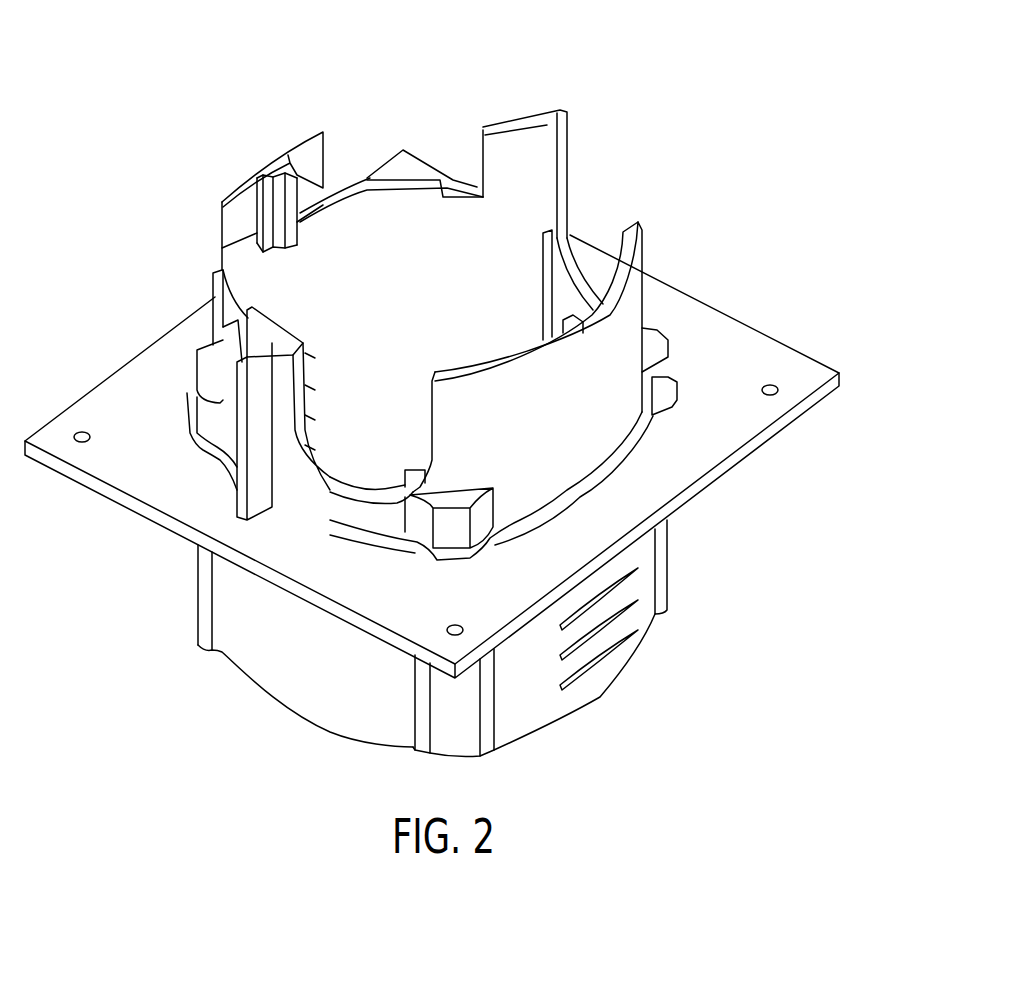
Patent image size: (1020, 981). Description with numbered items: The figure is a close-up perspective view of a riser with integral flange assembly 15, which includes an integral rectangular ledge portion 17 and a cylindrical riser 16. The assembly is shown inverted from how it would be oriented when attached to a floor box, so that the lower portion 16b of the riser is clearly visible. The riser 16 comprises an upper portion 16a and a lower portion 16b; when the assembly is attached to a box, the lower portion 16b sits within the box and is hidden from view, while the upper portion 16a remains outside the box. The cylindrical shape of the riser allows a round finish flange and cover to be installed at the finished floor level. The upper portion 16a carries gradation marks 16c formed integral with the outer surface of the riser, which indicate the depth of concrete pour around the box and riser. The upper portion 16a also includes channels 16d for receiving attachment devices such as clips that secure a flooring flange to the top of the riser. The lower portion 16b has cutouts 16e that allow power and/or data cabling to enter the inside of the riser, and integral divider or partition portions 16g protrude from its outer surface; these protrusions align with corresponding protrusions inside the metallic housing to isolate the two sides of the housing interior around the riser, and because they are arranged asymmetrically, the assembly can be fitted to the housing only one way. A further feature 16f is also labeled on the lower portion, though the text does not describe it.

The riser with integral flange assembly 15 is at (697, 77).
The cylindrical riser 16 is at (646, 622).
The upper portion 16a is at (605, 683).
The lower portion 16b is at (565, 440).
The gradation marks 16c is at (555, 618).
The channels 16d is at (208, 625).
The cutouts 16e is at (462, 113).
The post 16f is at (543, 315).
The integral divider or partition portions 16g is at (562, 128).
The integral rectangular ledge portion 17 is at (758, 326).